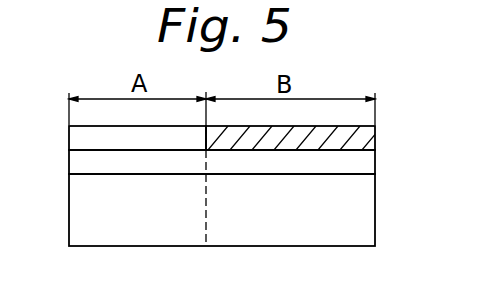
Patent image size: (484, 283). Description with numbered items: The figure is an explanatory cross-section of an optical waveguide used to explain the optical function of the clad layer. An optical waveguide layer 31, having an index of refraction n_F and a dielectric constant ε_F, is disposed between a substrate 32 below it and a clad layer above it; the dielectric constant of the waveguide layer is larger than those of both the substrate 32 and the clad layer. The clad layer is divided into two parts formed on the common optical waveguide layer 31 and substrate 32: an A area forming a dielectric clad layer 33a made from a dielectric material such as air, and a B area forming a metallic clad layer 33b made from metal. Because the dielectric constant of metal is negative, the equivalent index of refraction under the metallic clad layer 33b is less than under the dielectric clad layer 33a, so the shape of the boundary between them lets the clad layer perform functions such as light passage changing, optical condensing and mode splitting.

The optical waveguide layer 31 is at (367, 168).
The substrate 32 is at (367, 222).
The dielectric clad layer 33a is at (75, 163).
The metallic clad layer 33b is at (368, 138).